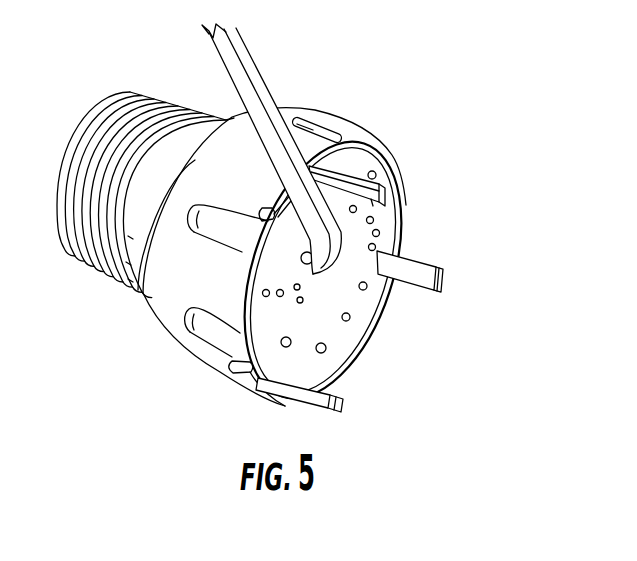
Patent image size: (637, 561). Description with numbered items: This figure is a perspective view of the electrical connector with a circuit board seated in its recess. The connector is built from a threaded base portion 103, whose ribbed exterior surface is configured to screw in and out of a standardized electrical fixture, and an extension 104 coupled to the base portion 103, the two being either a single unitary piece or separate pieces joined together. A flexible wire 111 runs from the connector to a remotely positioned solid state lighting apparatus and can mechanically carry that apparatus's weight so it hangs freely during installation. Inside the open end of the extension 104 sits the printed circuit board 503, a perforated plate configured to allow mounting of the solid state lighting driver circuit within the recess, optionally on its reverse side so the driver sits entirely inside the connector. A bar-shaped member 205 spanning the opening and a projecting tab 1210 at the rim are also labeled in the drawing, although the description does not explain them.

The base portion 103 is at (147, 93).
The extension 104 is at (347, 116).
The flexible wire 111 is at (252, 97).
The retaining bar 205 is at (377, 200).
The circuit board 503 is at (330, 325).
The locking tab 1210 is at (418, 278).